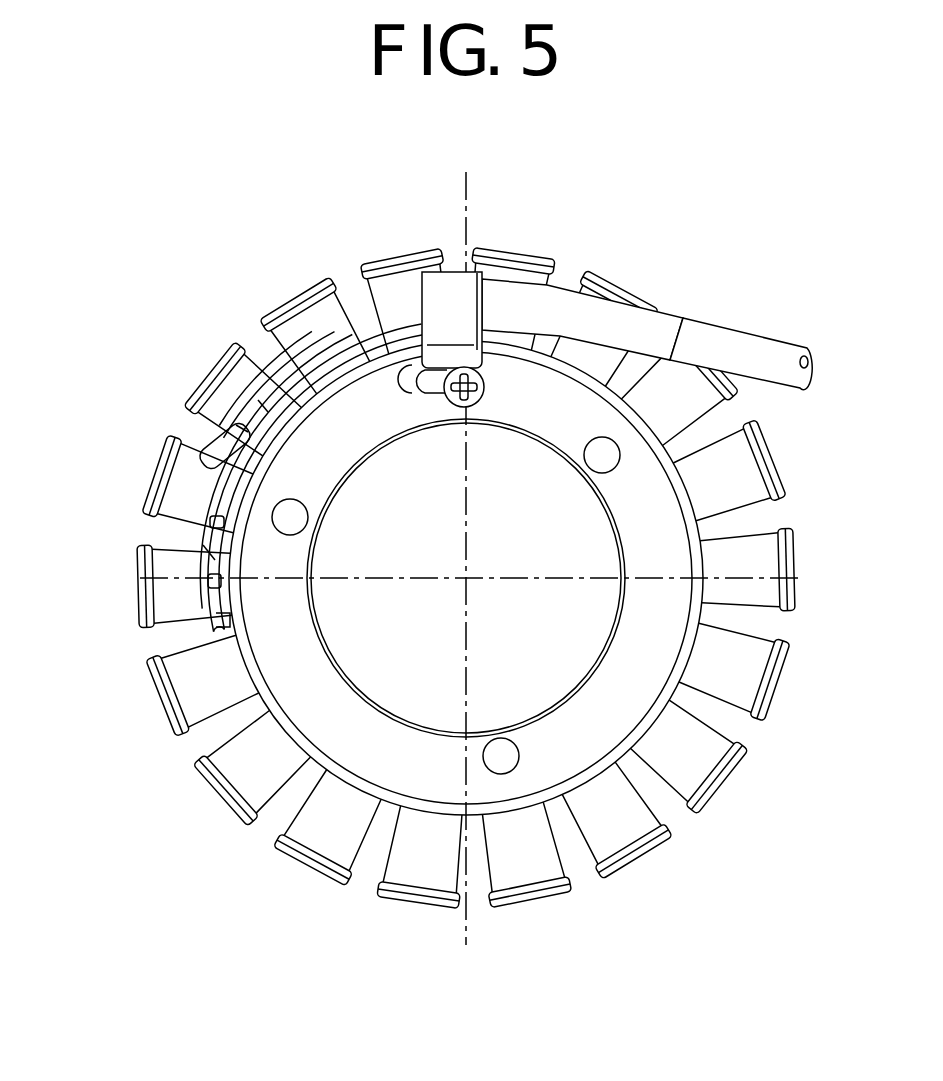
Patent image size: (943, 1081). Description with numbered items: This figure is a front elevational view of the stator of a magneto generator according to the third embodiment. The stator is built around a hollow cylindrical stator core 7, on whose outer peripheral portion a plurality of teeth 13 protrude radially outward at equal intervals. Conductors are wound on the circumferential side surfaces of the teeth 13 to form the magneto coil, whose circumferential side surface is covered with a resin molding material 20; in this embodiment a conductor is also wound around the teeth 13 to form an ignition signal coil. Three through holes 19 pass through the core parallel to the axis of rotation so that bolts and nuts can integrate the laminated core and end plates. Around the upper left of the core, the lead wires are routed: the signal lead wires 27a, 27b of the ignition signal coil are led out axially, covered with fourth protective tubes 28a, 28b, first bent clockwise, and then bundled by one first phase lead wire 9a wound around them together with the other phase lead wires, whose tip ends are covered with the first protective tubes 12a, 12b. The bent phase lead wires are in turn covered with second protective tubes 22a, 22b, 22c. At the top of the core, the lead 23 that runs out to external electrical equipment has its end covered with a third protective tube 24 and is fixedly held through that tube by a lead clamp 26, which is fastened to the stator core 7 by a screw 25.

The stator core 7 is at (643, 622).
The first phase lead wire 9a is at (205, 440).
The first protective tube 12a is at (235, 430).
The first protective tube 12b is at (262, 408).
The teeth 13 is at (775, 452).
The through holes 19 is at (290, 535).
The resin molding material 20 is at (532, 848).
The second protective tube 22a is at (318, 345).
The second protective tube 22b is at (355, 350).
The second protective tube 22c is at (282, 347).
The lead 23 is at (735, 345).
The third protective tube 24 is at (547, 307).
The screw 25 is at (486, 391).
The lead clamp 26 is at (452, 292).
The signal lead wire 27a is at (227, 623).
The signal lead wire 27b is at (205, 552).
The fourth protective tube 28a is at (210, 580).
The fourth protective tube 28b is at (215, 510).